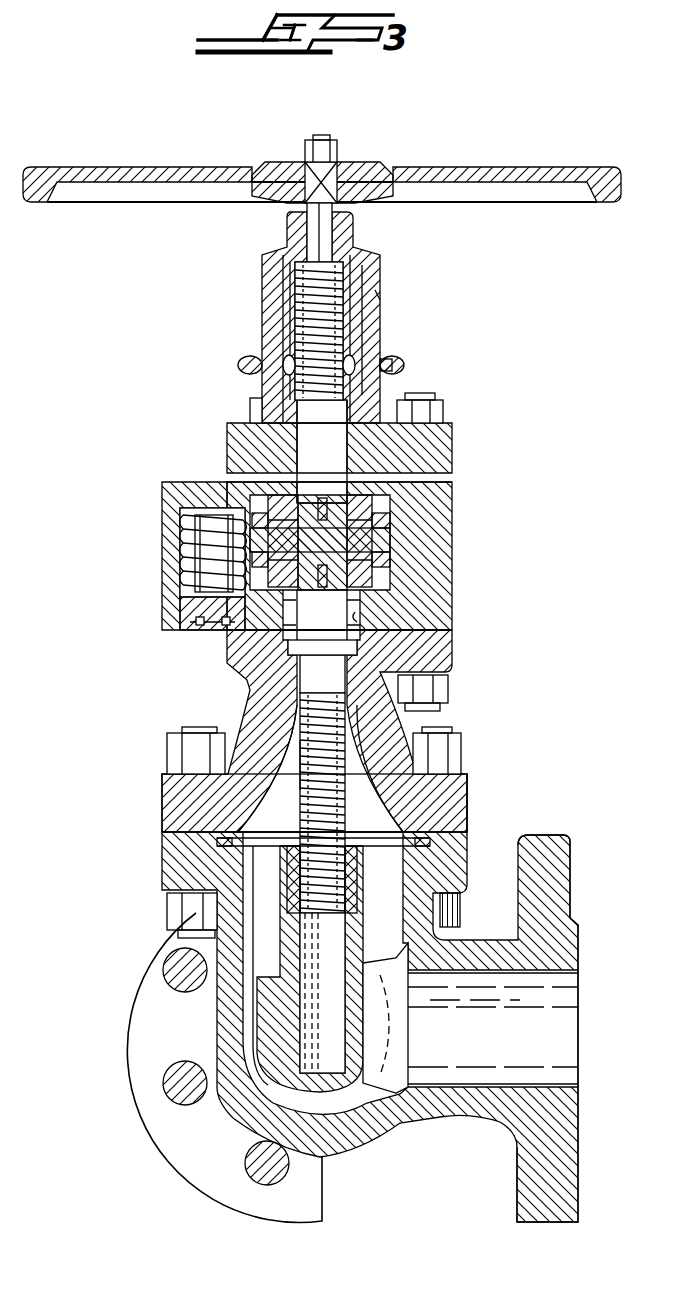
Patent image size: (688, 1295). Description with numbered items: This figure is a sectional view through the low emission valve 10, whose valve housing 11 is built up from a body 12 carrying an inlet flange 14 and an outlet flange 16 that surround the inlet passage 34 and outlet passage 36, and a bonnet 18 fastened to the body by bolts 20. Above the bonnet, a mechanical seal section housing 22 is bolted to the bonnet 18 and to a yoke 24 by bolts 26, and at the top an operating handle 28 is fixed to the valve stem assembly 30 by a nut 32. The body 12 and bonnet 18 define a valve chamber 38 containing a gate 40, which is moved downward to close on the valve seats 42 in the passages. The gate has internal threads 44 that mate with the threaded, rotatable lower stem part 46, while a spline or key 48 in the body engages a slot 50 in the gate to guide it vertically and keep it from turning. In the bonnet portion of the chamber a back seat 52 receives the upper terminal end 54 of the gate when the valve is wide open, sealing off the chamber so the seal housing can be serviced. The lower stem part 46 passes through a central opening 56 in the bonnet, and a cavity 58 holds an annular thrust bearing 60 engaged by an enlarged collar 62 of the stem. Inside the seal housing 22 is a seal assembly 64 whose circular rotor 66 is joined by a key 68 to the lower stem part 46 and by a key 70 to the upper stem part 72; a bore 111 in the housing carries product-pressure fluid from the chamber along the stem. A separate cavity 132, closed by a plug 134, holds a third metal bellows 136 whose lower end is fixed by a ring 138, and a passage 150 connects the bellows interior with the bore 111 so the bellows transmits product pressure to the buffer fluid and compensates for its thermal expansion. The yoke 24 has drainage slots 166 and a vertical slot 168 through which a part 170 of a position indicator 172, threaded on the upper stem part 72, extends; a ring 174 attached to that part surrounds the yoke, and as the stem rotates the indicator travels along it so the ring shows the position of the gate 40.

The low emission valve 10 is at (540, 745).
The valve housing 11 is at (470, 808).
The body 12 is at (167, 877).
The inlet flange 14 is at (563, 870).
The outlet flange 16 is at (143, 1063).
The bonnet 18 is at (167, 815).
The bolts 20 is at (440, 745).
The mechanical seal section housing 22 is at (440, 528).
The yoke 24 is at (268, 303).
The bolts 26 is at (444, 410).
The operating handle 28 is at (565, 172).
The valve stem assembly 30 is at (352, 314).
The nut 32 is at (338, 152).
The inlet passage 34 is at (575, 967).
The outlet passage 36 is at (323, 968).
The valve chamber 38 is at (385, 814).
The gate 40 is at (377, 960).
The valve seats 42 is at (395, 1010).
The internal threads 44 is at (347, 847).
The lower stem part 46 is at (305, 765).
The spline or key 48 is at (247, 860).
The slot 50 is at (260, 1022).
The back seat 52 is at (297, 712).
The upper terminal end 54 is at (300, 847).
The central opening 56 is at (253, 690).
The cavity 58 is at (337, 637).
The thrust bearing 60 is at (310, 668).
The enlarged collar 62 is at (340, 650).
The seal assembly 64 is at (220, 467).
The rotor 66 is at (397, 538).
The key 68 is at (326, 587).
The key 70 is at (332, 486).
The upper stem part 72 is at (336, 283).
The bore 111 is at (360, 615).
The cavity 132 is at (183, 517).
The closure member or plug 134 is at (210, 623).
The third metal bellows 136 is at (187, 560).
The ring 138 is at (187, 593).
The passage 150 is at (243, 603).
The drainage slots 166 is at (450, 477).
The vertical slot 168 is at (368, 328).
The part 170 is at (350, 370).
The position indicator 172 is at (285, 360).
The ring 174 is at (404, 365).